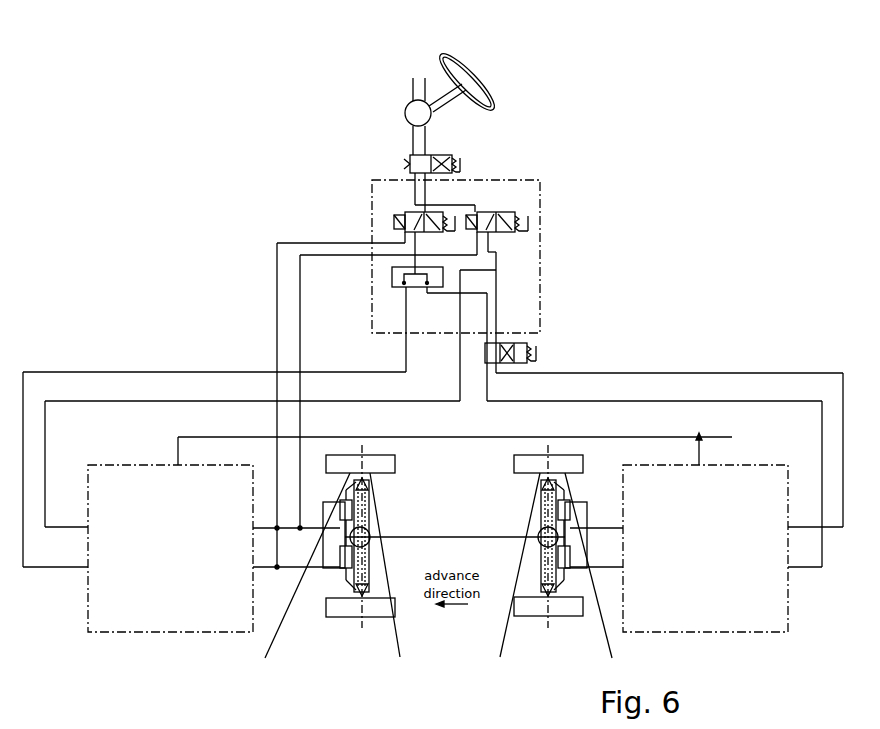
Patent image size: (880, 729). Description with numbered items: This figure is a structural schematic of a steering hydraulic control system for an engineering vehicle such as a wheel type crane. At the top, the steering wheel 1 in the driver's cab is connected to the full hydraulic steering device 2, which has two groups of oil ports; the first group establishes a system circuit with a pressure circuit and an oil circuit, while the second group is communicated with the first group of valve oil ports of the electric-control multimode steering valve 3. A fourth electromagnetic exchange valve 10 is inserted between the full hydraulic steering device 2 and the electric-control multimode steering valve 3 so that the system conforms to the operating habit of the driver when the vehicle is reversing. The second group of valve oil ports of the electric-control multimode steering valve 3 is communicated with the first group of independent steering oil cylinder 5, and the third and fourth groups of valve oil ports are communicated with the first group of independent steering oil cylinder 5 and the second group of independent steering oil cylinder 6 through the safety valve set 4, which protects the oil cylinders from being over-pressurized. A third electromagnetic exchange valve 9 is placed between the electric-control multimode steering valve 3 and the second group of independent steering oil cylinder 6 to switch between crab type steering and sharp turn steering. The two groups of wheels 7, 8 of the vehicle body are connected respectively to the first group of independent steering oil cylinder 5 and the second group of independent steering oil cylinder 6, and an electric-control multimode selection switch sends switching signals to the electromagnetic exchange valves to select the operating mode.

The steering wheel 1 is at (440, 63).
The full hydraulic steering device 2 is at (407, 106).
The electric-control multimode steering valve 3 is at (378, 186).
The safety valve set 4 is at (105, 617).
The first group of independent steering oil cylinder 5 is at (350, 520).
The second group of independent steering oil cylinder 6 is at (640, 660).
The group of wheels 7 is at (378, 610).
The group of wheels 8 is at (528, 610).
The third electromagnetic exchange valve 9 is at (533, 352).
The fourth electromagnetic exchange valve 10 is at (460, 170).